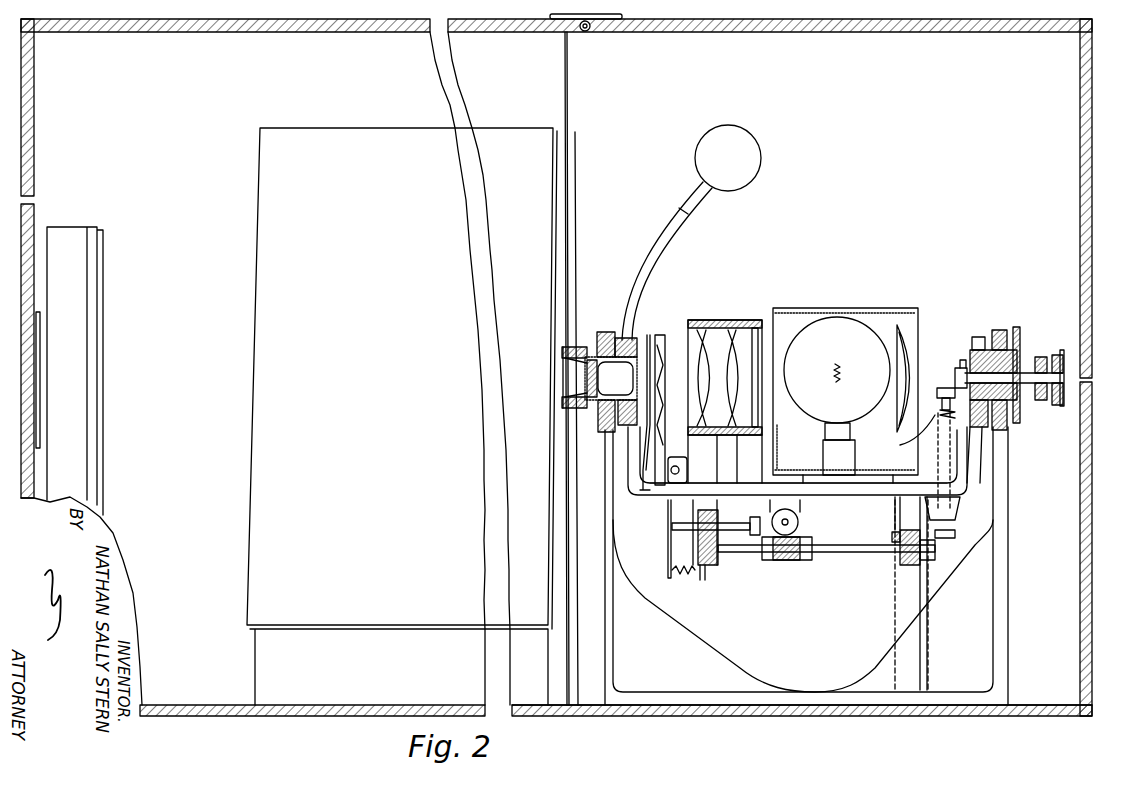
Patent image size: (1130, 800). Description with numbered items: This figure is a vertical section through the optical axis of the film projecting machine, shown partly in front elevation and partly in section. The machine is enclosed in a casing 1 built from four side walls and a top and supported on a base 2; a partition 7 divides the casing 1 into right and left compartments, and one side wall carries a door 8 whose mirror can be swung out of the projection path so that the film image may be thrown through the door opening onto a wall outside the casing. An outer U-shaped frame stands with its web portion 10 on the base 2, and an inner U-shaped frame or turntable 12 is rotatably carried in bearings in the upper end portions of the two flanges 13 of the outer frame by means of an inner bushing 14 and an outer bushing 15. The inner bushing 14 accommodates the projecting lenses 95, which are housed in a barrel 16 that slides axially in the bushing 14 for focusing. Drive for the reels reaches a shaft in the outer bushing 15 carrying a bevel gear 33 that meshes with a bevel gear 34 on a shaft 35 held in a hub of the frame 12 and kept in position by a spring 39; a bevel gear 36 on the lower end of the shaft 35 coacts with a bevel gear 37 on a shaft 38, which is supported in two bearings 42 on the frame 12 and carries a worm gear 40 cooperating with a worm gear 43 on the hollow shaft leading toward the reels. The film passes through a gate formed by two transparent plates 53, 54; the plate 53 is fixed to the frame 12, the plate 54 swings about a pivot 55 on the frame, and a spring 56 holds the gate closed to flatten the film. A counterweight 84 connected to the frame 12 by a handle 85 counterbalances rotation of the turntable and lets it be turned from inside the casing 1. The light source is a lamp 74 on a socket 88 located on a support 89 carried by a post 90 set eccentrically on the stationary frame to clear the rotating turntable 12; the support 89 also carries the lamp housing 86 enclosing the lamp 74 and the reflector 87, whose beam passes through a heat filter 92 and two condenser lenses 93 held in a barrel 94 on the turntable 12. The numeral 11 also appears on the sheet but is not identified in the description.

The casing 1 is at (1093, 452).
The base 2 is at (805, 716).
The partition 7 is at (569, 96).
The door 8 is at (36, 203).
The web portion 10 is at (690, 705).
The bottom wall left part 11 is at (272, 716).
The inner U-shaped frame 12 is at (862, 496).
The flanges 13 is at (607, 330).
The inner bushing 14 is at (600, 416).
The outer bushing 15 is at (1010, 350).
The barrel 16 is at (592, 358).
The bevel gear 33 is at (957, 368).
The bevel gear 34 is at (945, 388).
The shaft 35 is at (960, 505).
The bevel gear 36 is at (955, 534).
The bevel gear 37 is at (935, 552).
The shaft 38 is at (870, 552).
The spring 39 is at (909, 439).
The worm gear 40 is at (790, 560).
The bearings 42 is at (718, 565).
The worm gear 43 is at (798, 520).
The transparent plate 53 is at (650, 335).
The transparent plate 54 is at (663, 335).
The pivot 55 is at (680, 470).
The spring 56 is at (690, 578).
The lamp 74 is at (840, 318).
The counterweight 84 is at (760, 162).
The handle 85 is at (670, 248).
The lamp housing 86 is at (905, 308).
The reflector 87 is at (912, 338).
The socket 88 is at (823, 448).
The support 89 is at (848, 487).
The post 90 is at (930, 600).
The heat filter 92 is at (757, 325).
The condenser lenses 93 is at (709, 320).
The barrel 94 is at (733, 320).
The projecting lenses 95 is at (611, 378).